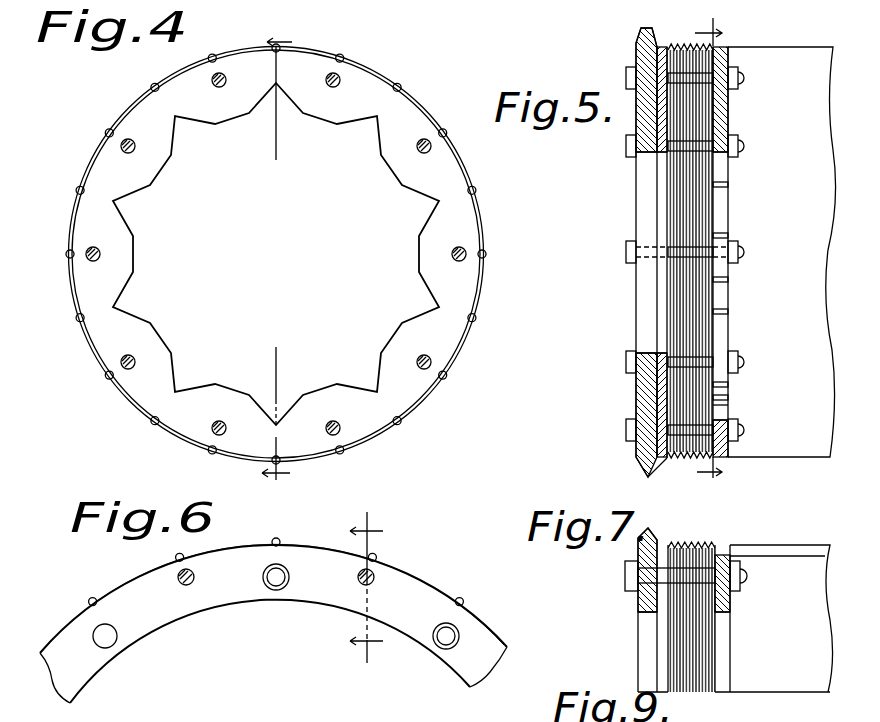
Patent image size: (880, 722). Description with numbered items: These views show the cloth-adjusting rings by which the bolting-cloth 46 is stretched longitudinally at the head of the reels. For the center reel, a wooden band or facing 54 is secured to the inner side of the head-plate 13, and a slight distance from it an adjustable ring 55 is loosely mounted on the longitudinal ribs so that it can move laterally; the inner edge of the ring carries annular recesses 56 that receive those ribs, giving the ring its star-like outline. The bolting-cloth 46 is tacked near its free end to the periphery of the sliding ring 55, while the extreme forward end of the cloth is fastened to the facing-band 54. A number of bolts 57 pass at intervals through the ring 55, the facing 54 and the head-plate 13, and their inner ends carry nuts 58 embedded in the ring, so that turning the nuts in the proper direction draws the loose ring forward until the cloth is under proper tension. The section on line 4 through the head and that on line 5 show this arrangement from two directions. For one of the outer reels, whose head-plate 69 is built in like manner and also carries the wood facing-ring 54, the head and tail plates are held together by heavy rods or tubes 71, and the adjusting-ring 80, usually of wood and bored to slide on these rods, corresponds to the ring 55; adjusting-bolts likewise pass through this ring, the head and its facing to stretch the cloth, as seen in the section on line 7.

In FIG. 5, the section line 4- 4 is at (710, 250).
In FIG. 4, the section line 5- 5 is at (277, 261).
In FIG. 6, the section line 7- 7 is at (366, 594).
In FIG. 5, the head-plate 13 is at (636, 397).
In FIG. 4, the bolting-cloth 46 is at (480, 268).
In FIG. 5, the bolting-cloth 46 is at (695, 313).
In FIG. 6, the bolting-cloth 46 is at (128, 586).
In FIG. 7, the bolting-cloth 46 is at (726, 605).
In FIG. 5, the wooden band or facing 54 is at (650, 470).
In FIG. 4, the adjustable ring 55 is at (293, 254).
In FIG. 5, the adjustable ring 55 is at (724, 407).
In FIG. 4, the annular recesses 56 is at (145, 313).
In FIG. 5, the annular recesses 56 is at (722, 298).
In FIG. 4, the bolts 57 is at (93, 247).
In FIG. 5, the bolts 57 is at (700, 146).
In FIG. 6, the bolts 57 is at (371, 575).
In FIG. 7, the bolts 57 is at (660, 575).
In FIG. 5, the nuts 58 is at (741, 370).
In FIG. 7, the nuts 58 is at (759, 584).
In FIG. 7, the head-plate 69 is at (646, 668).
In FIG. 6, the rods or tubes 71 is at (278, 587).
In FIG. 6, the adjusting-ring 80 is at (131, 618).
In FIG. 7, the adjusting-ring 80 is at (733, 628).